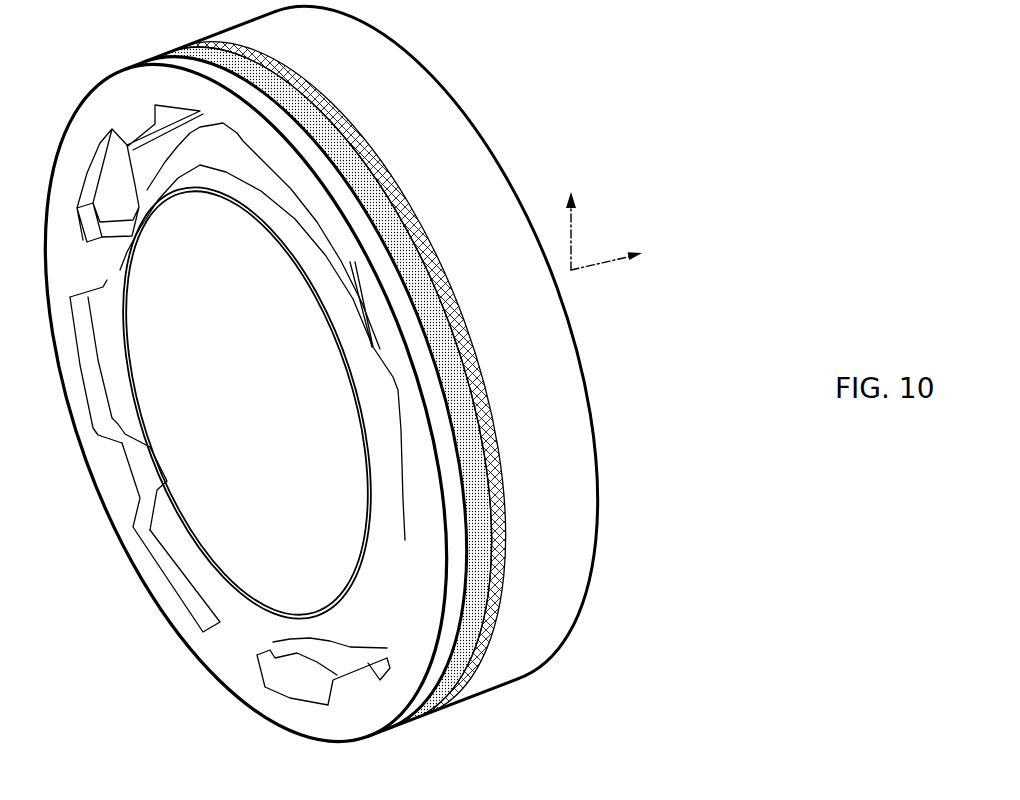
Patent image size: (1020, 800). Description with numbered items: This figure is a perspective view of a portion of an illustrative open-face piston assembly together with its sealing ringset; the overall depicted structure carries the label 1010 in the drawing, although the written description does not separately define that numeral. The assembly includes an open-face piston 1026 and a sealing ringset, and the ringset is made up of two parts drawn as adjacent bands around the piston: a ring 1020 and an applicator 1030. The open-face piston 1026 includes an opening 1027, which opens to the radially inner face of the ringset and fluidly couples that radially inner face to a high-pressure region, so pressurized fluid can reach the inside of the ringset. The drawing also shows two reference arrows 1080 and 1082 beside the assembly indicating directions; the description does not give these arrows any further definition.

The ring-shaped housing 1010 is at (488, 36).
The ring 1020 is at (497, 415).
The open-face piston 1026 is at (268, 414).
The opening 1027 is at (213, 601).
The applicator 1030 is at (465, 370).
The axial direction arrow 1080 is at (638, 250).
The radial direction arrow 1082 is at (572, 213).